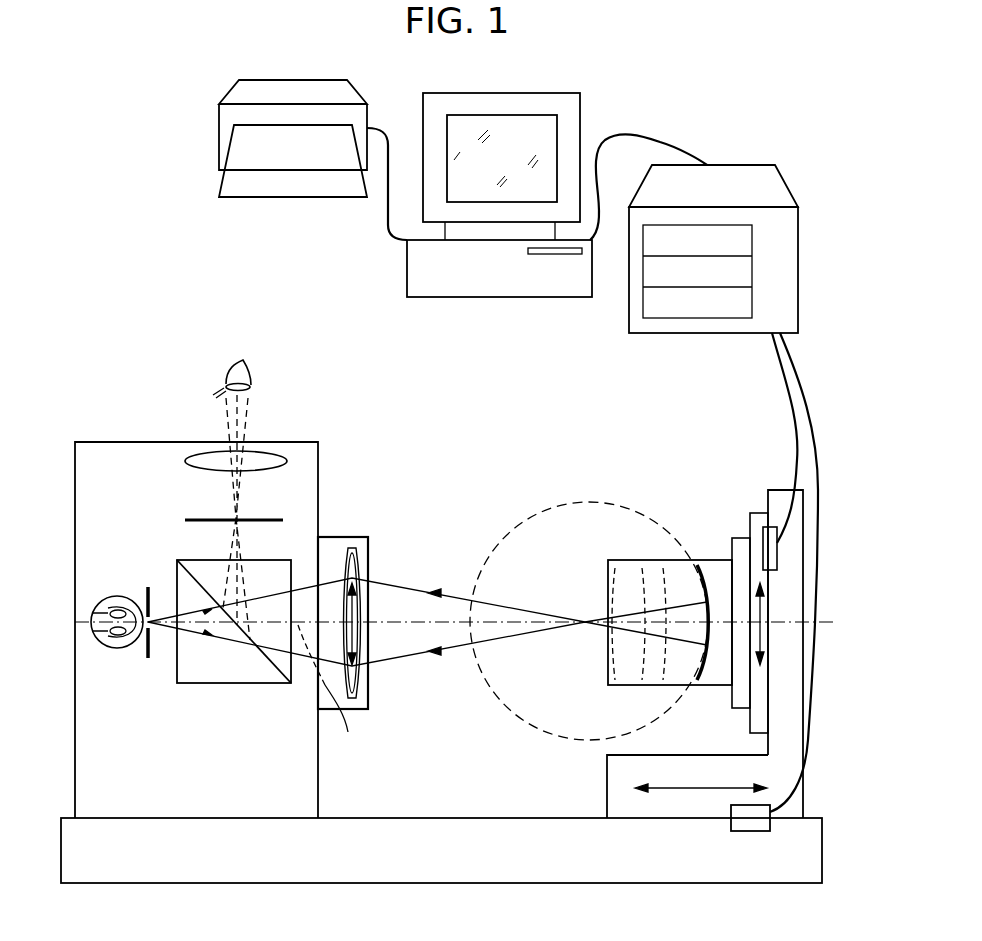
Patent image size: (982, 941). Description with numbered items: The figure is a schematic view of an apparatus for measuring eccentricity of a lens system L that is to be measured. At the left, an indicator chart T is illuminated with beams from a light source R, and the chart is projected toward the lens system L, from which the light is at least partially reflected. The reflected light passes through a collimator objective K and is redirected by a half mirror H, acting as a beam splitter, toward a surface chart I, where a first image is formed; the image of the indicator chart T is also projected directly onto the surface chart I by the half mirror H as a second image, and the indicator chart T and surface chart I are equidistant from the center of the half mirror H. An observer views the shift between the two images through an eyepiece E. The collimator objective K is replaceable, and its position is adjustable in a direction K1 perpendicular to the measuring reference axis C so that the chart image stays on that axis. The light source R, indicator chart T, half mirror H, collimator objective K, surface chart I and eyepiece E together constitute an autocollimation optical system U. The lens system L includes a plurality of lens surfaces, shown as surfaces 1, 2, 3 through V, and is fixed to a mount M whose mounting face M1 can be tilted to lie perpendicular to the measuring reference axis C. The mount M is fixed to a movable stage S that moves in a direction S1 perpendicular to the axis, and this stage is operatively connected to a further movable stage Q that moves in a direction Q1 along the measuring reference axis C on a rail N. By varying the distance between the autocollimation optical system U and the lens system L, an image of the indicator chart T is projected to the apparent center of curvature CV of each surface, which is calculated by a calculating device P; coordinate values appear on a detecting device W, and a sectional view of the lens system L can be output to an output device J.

The output device J is at (273, 80).
The calculating device P is at (567, 93).
The detecting device W is at (742, 165).
The autocollimation optical system U is at (300, 441).
The eyepiece E is at (185, 462).
The surface chart I is at (185, 522).
The light source R is at (105, 650).
The indicator chart T is at (146, 656).
The half mirror H is at (268, 662).
The collimator objective K is at (376, 595).
The adjustment direction of collimator objective K1 is at (355, 614).
The measuring reference axis C is at (327, 690).
The apparent center of curvature CV is at (585, 617).
The lens system L is at (670, 593).
The first lens surface 1 is at (614, 623).
The second lens surface 2 is at (653, 623).
The third lens surface 3 is at (673, 623).
The V-th lens surface V is at (710, 622).
The mounting face M1 is at (730, 543).
The mount M is at (737, 538).
The movable stage S is at (739, 637).
The movement direction of movable stage S1 is at (763, 612).
The rail N is at (441, 818).
The movable stage Q is at (620, 788).
The movement direction of movable stage Q1 is at (693, 790).